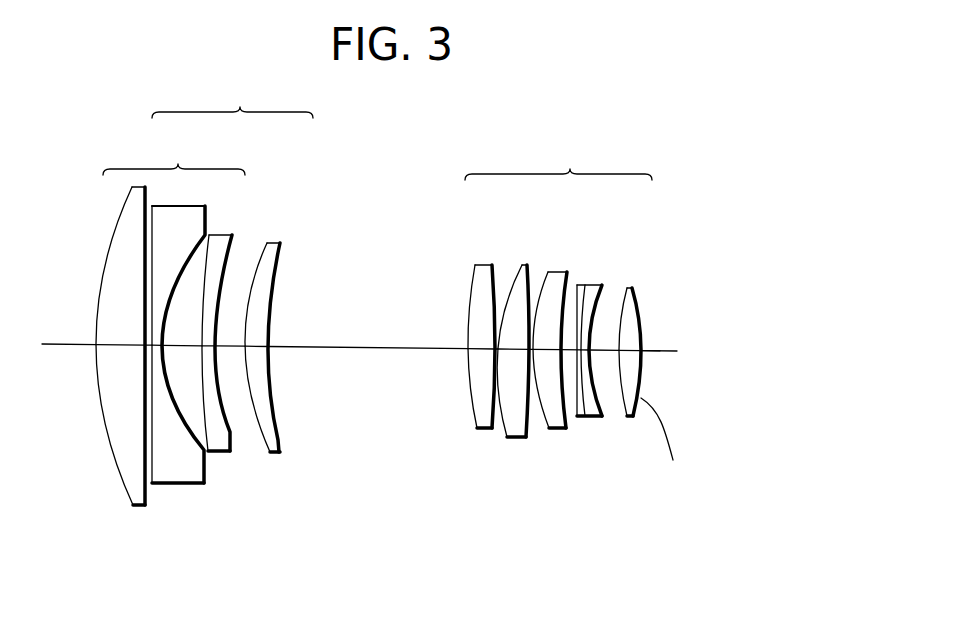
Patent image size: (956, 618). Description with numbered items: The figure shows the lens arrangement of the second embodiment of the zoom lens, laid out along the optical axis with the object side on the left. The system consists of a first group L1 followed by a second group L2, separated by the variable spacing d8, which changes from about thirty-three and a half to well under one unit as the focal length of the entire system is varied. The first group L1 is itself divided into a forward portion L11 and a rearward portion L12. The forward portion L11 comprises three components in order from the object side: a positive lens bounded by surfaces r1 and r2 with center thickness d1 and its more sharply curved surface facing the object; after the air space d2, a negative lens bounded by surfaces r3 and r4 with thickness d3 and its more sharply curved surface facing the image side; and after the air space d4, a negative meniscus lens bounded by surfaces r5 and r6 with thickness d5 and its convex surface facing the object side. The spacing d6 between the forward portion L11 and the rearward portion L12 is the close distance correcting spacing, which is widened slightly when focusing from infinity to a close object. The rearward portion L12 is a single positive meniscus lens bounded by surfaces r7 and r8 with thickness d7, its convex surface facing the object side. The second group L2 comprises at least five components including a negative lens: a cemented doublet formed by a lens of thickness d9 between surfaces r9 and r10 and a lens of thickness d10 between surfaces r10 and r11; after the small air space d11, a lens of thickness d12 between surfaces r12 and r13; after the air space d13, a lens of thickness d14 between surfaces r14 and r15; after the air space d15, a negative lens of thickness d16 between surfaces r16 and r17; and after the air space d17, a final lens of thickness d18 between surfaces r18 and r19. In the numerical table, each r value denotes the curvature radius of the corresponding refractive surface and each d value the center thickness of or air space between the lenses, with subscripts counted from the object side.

The first group L1 is at (232, 100).
The forward portion of the first group L11 is at (174, 157).
The rearward portion of the first group L12 is at (276, 243).
The second group L2 is at (558, 162).
The first refractive surface r1 is at (124, 478).
The second refractive surface r2 is at (144, 488).
The third refractive surface r3 is at (156, 467).
The fourth refractive surface r4 is at (193, 440).
The fifth refractive surface r5 is at (207, 435).
The sixth refractive surface r6 is at (230, 432).
The seventh refractive surface r7 is at (262, 442).
The eighth refractive surface r8 is at (278, 449).
The ninth refractive surface r9 is at (474, 416).
The tenth refractive surface r10 is at (492, 430).
The eleventh refractive surface r11 is at (506, 440).
The twelfth refractive surface r12 is at (526, 440).
The thirteenth refractive surface r13 is at (549, 431).
The fourteenth refractive surface r14 is at (566, 431).
The fifteenth refractive surface r15 is at (580, 419).
The sixteenth refractive surface r16 is at (601, 418).
The seventeenth refractive surface r17 is at (627, 420).
The eighteenth refractive surface r18 is at (634, 418).
The nineteenth refractive surface r19 is at (668, 442).
The center thickness of the first lens d1 is at (120, 333).
The air space between the first and second lenses d2 is at (147, 344).
The center thickness of the second lens d3 is at (150, 349).
The air space between the second and third lenses d4 is at (182, 334).
The center thickness of the third lens d5 is at (207, 348).
The close distance correcting spacing d6 is at (230, 334).
The center thickness of the fourth lens d7 is at (248, 348).
The variable spacing d8 is at (368, 337).
The center thickness of the fifth lens d9 is at (481, 339).
The center thickness of the sixth lens d10 is at (496, 356).
The air space between the sixth and seventh lenses d11 is at (499, 324).
The center thickness of the seventh lens d12 is at (515, 339).
The air space between the seventh and eighth lenses d13 is at (533, 290).
The center thickness of the eighth lens d14 is at (556, 339).
The air space between the eighth and ninth lenses d15 is at (569, 358).
The center thickness of the ninth lens d16 is at (590, 286).
The air space between the ninth and tenth lenses d17 is at (616, 336).
The center thickness of the tenth lens d18 is at (634, 327).